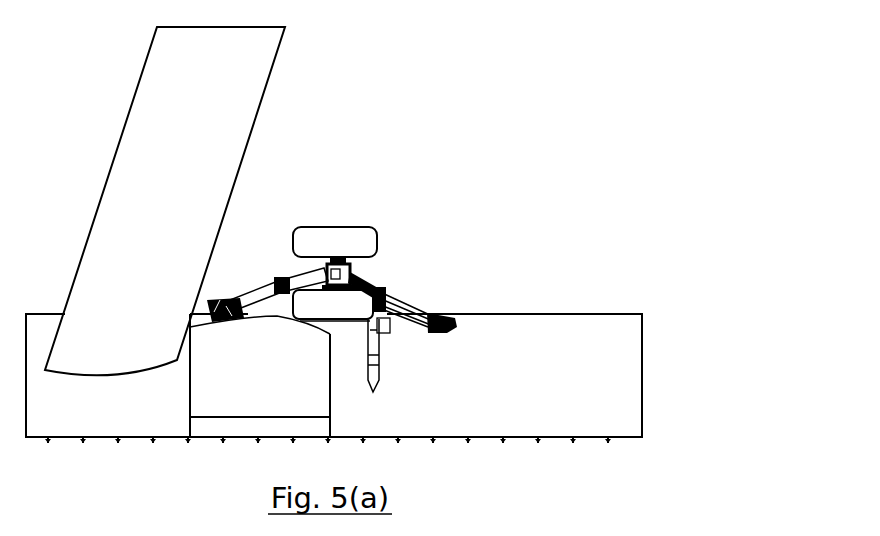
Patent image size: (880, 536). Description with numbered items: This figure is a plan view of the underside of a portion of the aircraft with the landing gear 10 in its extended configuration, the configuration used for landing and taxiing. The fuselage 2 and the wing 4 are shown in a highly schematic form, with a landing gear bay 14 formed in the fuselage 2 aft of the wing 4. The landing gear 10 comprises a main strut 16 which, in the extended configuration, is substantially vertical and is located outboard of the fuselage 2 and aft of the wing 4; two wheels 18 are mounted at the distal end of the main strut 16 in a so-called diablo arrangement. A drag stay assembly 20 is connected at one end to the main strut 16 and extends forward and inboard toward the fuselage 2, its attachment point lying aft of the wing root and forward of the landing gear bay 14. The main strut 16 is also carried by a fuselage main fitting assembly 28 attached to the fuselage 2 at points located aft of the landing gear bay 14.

The fuselage 2 is at (510, 408).
The wing 4 is at (133, 226).
The landing gear 10 is at (385, 250).
The landing gear bay 14 is at (256, 396).
The main strut 16 is at (345, 260).
The wheels 18 is at (313, 245).
The drag stay assembly 20 is at (263, 280).
The fuselage main fitting assembly 28 is at (408, 292).